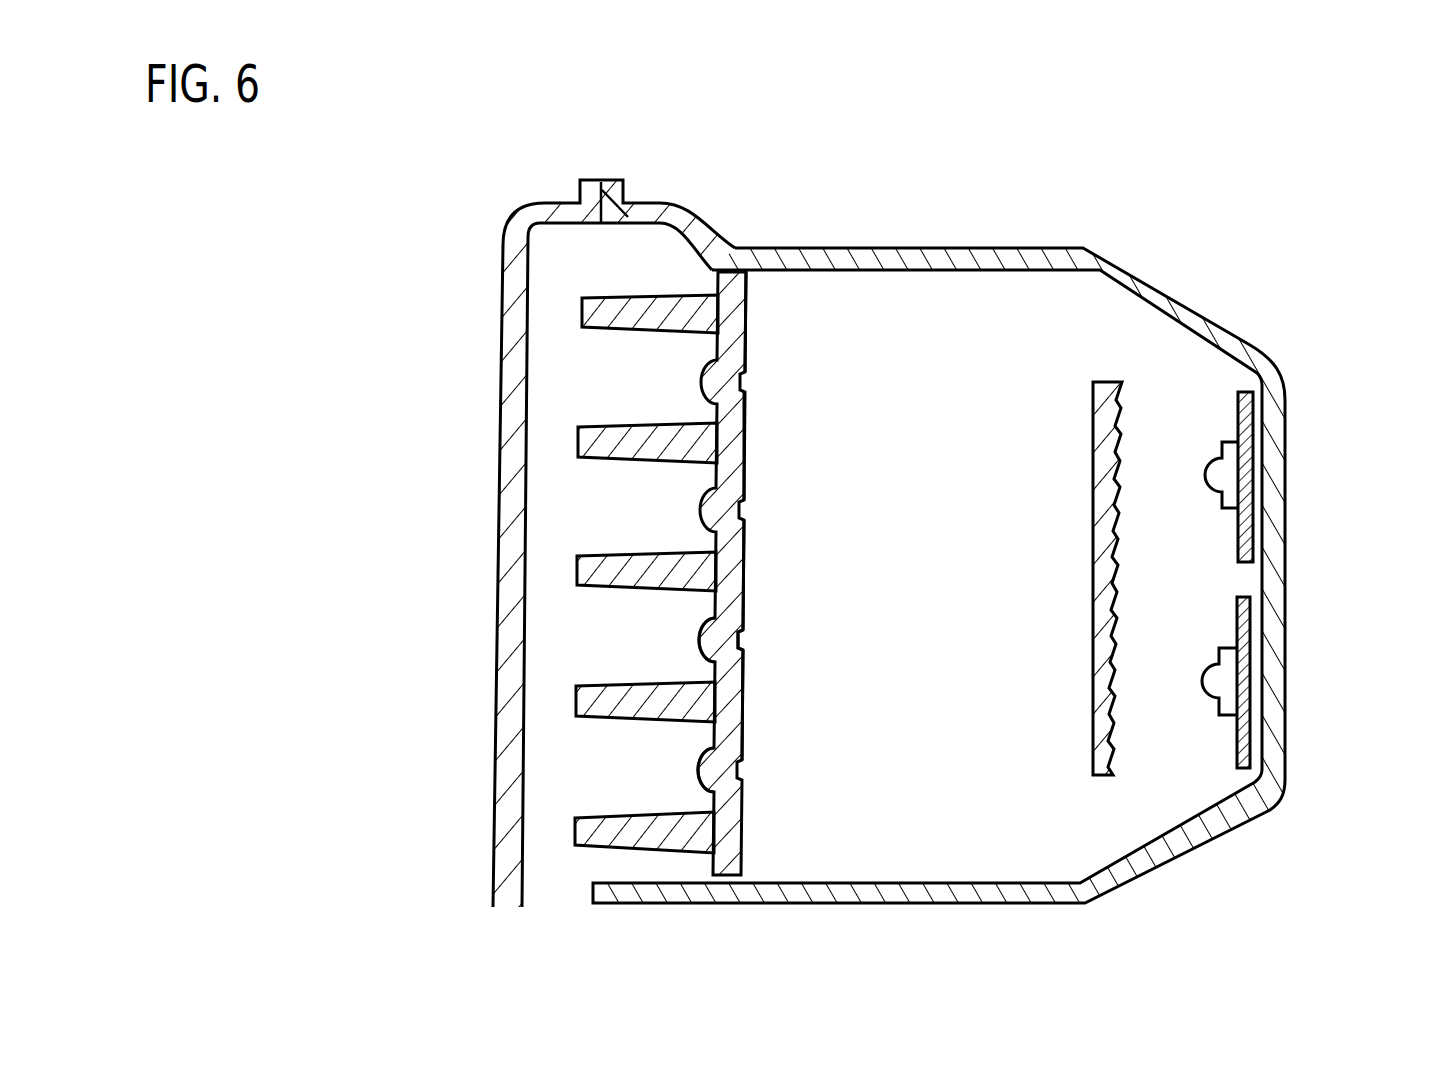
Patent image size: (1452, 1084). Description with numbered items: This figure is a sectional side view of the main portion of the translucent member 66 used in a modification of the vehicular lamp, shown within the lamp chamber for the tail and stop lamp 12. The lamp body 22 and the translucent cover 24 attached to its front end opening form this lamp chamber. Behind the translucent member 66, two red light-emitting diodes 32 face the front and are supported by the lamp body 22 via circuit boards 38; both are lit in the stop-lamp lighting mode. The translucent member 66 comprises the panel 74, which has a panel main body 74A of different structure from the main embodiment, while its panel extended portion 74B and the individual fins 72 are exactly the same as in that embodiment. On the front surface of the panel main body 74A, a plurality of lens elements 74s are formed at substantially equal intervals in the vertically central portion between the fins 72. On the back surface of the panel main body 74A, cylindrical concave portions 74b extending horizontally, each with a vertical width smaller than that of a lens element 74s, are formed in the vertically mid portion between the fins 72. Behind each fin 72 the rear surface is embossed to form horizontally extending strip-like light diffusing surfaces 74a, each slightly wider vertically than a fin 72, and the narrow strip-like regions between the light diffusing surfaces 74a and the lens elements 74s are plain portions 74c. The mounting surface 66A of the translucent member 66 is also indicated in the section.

The tail and stop lamp 12 is at (810, 543).
The lamp body 22 is at (1208, 310).
The translucent cover 24 is at (493, 495).
The light-emitting diodes 32 is at (1205, 458).
The circuit boards 38 is at (1247, 485).
The translucent member 66 is at (832, 536).
The heat sink mounting surface 66A is at (761, 563).
The fins 72 is at (634, 420).
The panel 74 is at (746, 573).
The panel main body 74A is at (731, 613).
The light diffusing surfaces 74a is at (742, 717).
The cylindrical concave portions 74b is at (740, 639).
The plain portions 74c is at (713, 795).
The lens elements 74s is at (702, 632).
The panel extended portion 74B is at (1100, 658).